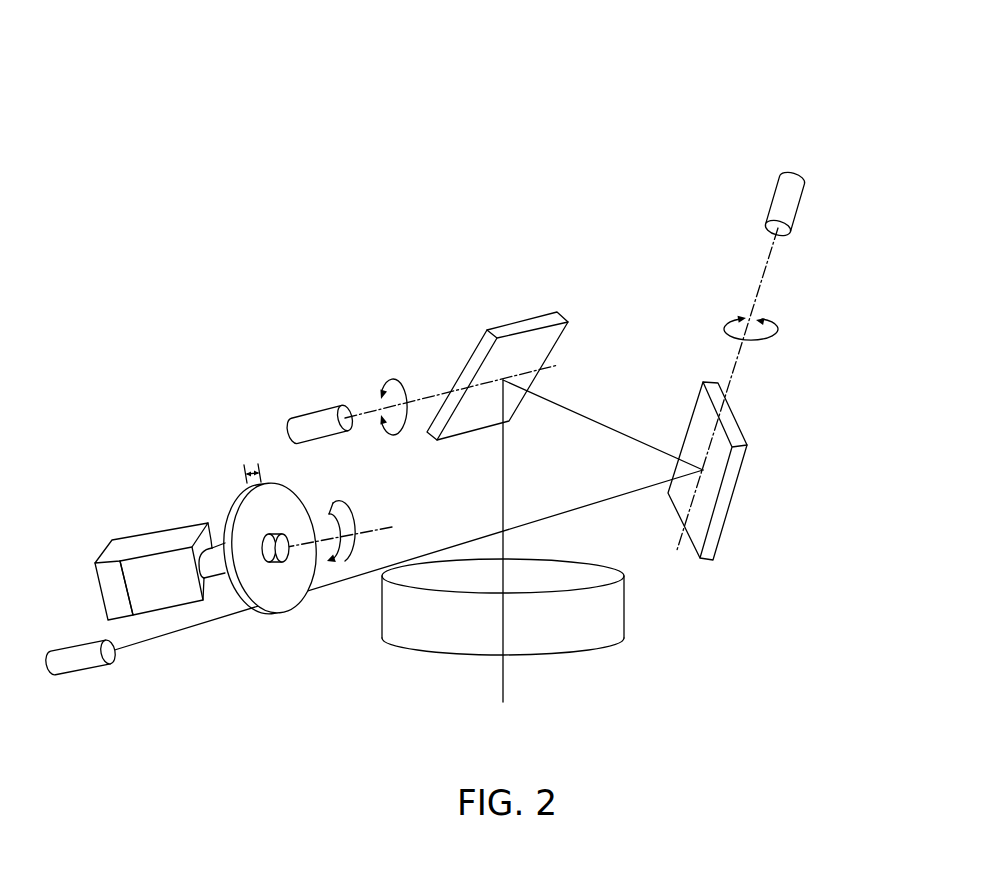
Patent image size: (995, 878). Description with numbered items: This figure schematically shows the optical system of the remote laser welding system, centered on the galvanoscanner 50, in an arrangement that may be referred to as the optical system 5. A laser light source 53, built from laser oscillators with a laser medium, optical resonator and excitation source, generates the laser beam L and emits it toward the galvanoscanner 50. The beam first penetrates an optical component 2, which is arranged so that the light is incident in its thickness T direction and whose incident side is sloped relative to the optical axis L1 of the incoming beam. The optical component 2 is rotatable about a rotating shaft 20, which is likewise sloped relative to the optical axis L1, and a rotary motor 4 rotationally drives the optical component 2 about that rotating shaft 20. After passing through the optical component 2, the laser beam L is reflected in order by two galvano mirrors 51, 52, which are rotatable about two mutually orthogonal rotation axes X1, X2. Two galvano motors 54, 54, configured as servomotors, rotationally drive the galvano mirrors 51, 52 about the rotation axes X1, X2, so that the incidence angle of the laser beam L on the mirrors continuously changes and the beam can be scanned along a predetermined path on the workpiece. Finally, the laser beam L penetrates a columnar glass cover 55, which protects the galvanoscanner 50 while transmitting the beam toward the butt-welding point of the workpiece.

The laser processing apparatus 5 is at (430, 88).
The galvanoscanner 50 is at (492, 151).
The optical component 2 is at (275, 484).
The rotating shaft 20 is at (285, 535).
The rotary motor 4 is at (160, 536).
The thickness T is at (250, 467).
The optical axis L1 is at (206, 626).
The laser beam L is at (505, 682).
The rotation axis X1 is at (737, 377).
The rotation axis X2 is at (425, 397).
The galvano mirror 51 is at (725, 508).
The galvano mirror 52 is at (480, 343).
The laser light source 53 is at (87, 663).
The galvano motor 54 is at (320, 415).
The glass cover 55 is at (448, 647).